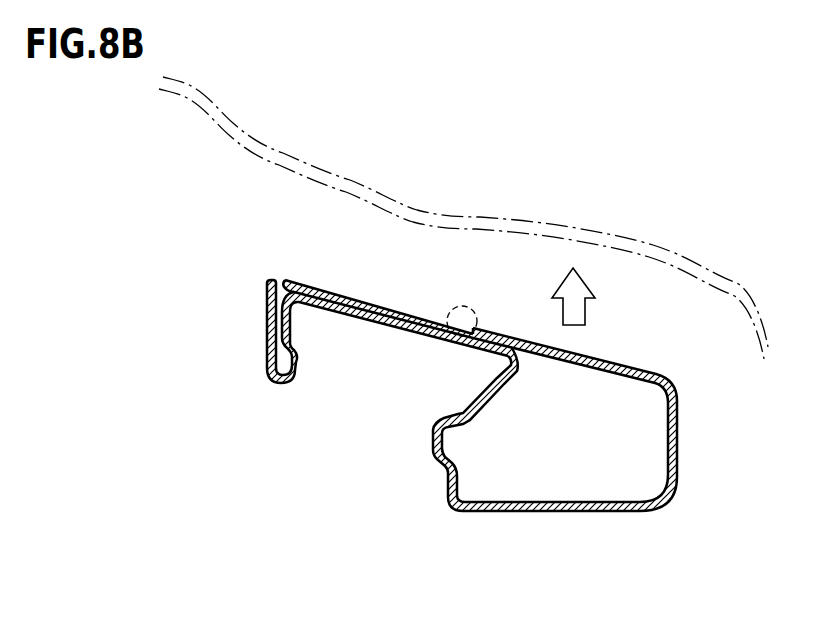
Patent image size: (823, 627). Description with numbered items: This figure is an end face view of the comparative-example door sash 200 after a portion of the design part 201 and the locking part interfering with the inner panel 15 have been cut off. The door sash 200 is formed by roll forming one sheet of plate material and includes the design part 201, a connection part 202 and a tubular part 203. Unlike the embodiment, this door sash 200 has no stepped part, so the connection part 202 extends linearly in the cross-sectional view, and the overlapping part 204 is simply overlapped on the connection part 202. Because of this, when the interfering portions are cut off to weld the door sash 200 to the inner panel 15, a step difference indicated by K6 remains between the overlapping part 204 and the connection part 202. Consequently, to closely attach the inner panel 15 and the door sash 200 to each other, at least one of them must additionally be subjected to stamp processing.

The inner panel 15 is at (570, 227).
The door sash 200 is at (506, 547).
The design part 201 is at (281, 383).
The connection part 202 is at (397, 328).
The tubular part 203 is at (677, 465).
The overlapping part 204 is at (517, 336).
The step difference K6 is at (460, 310).